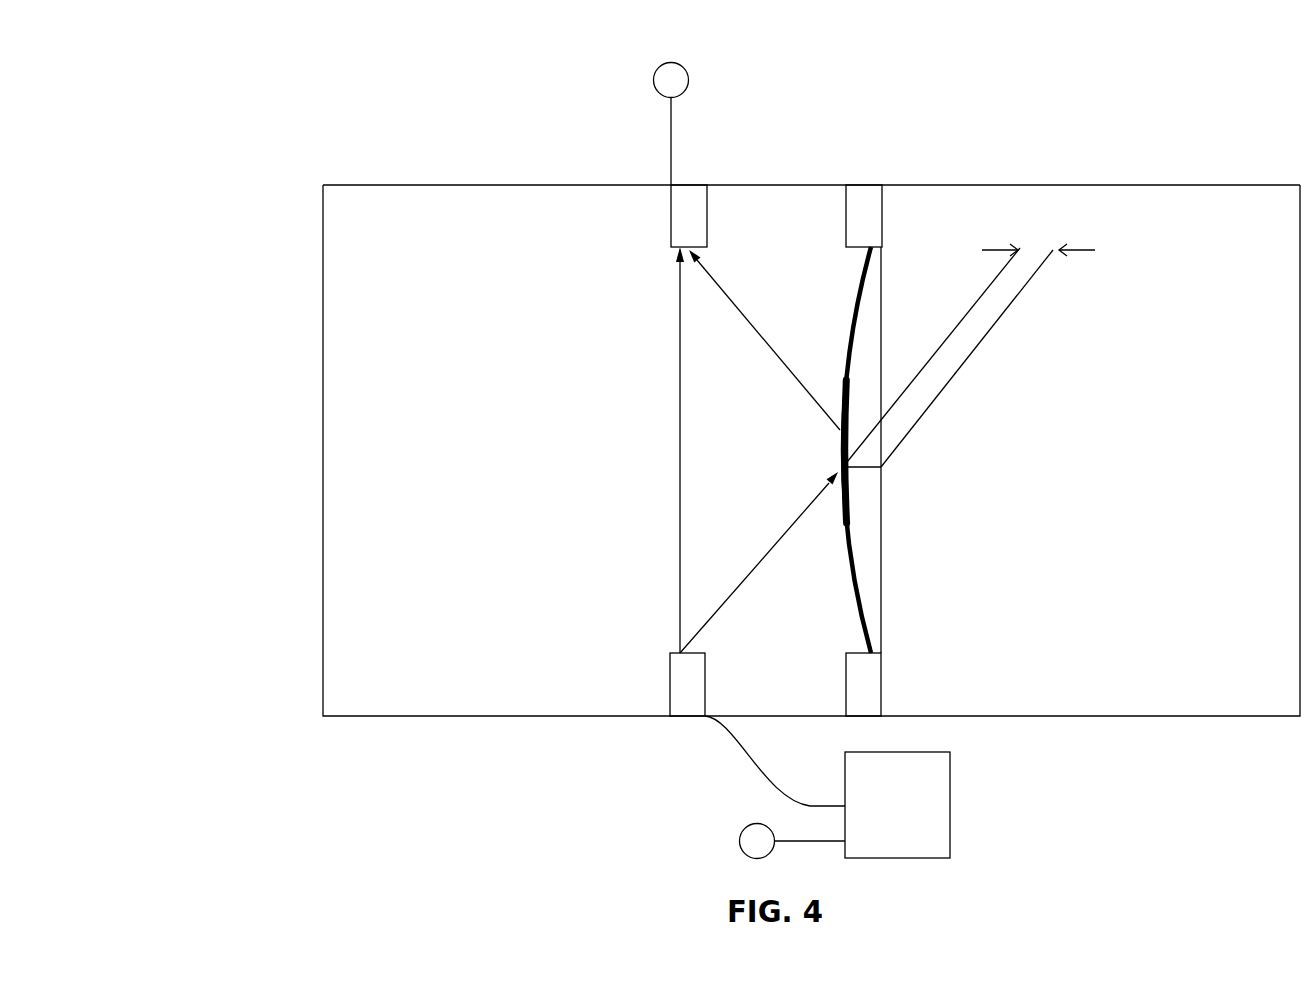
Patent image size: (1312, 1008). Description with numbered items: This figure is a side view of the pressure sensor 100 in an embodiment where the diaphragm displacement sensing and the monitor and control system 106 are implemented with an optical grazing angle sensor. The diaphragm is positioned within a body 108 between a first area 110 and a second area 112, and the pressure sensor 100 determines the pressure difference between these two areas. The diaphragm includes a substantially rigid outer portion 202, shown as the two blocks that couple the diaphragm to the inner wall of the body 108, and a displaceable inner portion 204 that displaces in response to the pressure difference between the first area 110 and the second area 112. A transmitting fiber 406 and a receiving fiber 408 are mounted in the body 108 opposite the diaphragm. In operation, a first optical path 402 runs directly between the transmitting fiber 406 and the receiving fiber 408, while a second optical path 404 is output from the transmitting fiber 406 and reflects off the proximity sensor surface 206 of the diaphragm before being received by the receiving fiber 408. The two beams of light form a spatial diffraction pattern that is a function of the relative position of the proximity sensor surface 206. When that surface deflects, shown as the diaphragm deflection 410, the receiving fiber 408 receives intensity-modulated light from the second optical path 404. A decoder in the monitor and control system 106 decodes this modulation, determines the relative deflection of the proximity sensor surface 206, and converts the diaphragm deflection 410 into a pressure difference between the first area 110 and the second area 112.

The pressure sensor 100 is at (200, 120).
The monitor and control system 106 is at (950, 790).
The body 108 is at (460, 185).
The first area 110 is at (427, 683).
The second area 112 is at (1142, 702).
The substantially rigid outer portion 202 is at (860, 185).
The displaceable inner portion 204 is at (862, 277).
The proximity sensor surface 206 is at (842, 382).
The first optical path 402 is at (672, 364).
The second optical path 404 is at (763, 558).
The transmitting fiber 406 is at (670, 685).
The receiving fiber 408 is at (671, 224).
The diaphragm deflection 410 is at (1028, 258).